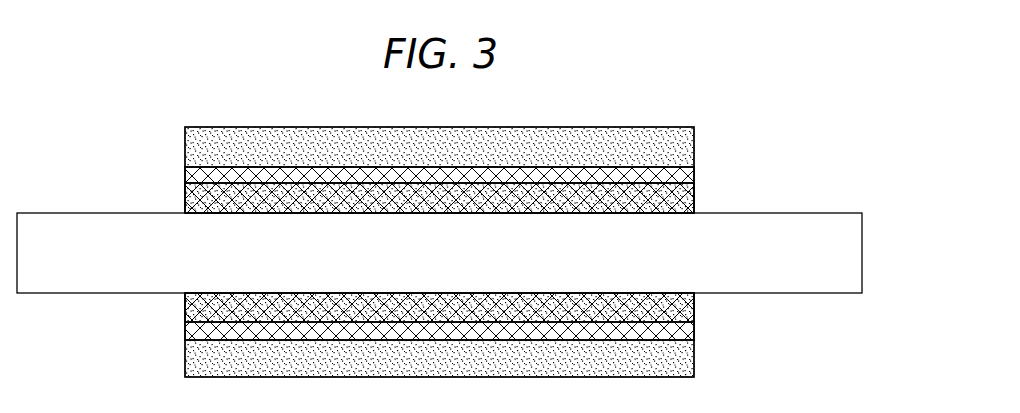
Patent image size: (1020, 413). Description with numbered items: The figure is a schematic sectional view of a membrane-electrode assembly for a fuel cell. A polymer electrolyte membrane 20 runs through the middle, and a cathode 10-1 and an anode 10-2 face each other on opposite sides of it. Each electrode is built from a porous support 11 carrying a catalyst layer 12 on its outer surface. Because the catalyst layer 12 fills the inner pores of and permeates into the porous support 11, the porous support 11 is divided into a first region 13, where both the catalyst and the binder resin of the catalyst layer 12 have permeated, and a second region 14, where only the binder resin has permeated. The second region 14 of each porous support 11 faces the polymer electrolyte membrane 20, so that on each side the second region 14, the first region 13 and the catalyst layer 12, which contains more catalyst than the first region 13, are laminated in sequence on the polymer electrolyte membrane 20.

The polymer electrolyte membrane 20 is at (855, 254).
The catalyst layer 12 is at (688, 145).
The first region 13 is at (688, 175).
The second region 14 is at (688, 205).
The porous support 11 is at (178, 165).
The cathode 10-1 is at (743, 135).
The anode 10-2 is at (743, 300).